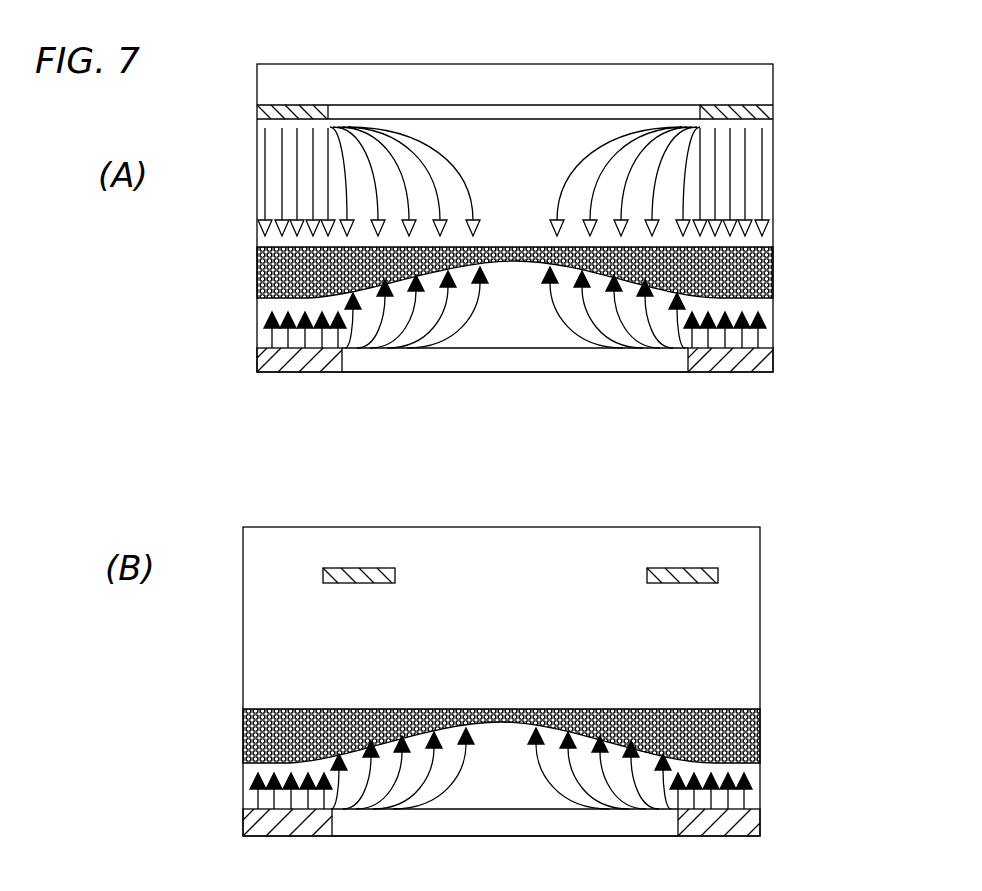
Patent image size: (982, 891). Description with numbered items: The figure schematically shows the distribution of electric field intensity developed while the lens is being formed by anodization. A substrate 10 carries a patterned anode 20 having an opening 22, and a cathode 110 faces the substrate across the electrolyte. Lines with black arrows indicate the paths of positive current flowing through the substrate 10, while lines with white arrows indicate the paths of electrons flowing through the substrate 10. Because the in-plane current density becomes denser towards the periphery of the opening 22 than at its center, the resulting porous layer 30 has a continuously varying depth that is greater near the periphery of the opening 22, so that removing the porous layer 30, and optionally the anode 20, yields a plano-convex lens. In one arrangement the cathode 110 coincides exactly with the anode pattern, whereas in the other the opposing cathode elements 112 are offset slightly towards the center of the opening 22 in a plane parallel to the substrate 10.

The cathode 110 is at (725, 105).
The cathode elements 112 is at (375, 568).
The porous layer 30 is at (257, 275).
The substrate 10 is at (257, 325).
The anode 20 is at (725, 373).
The opening 22 is at (508, 372).